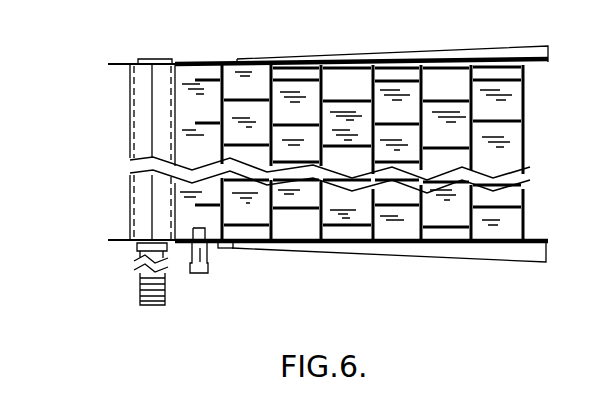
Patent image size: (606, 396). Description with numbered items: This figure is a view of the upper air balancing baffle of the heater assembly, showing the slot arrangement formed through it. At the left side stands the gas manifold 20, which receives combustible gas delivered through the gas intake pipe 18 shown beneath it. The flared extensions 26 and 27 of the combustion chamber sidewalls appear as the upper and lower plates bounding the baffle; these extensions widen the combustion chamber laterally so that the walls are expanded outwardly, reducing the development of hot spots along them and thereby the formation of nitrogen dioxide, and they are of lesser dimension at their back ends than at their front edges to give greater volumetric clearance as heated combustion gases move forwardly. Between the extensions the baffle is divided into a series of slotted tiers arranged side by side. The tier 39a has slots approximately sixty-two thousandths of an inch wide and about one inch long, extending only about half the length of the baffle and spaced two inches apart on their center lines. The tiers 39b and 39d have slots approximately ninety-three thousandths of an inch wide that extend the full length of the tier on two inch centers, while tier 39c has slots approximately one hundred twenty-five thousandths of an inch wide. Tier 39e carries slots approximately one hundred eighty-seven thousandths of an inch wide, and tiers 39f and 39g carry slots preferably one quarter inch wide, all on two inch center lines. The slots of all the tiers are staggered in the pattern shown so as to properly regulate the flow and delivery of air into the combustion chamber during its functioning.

The gas intake pipe 18 is at (140, 297).
The gas manifold 20 is at (142, 103).
The flared extension 26 is at (546, 262).
The flared extension 27 is at (540, 53).
The air balancing baffle tier 39a is at (188, 78).
The air balancing baffle tier 39b is at (241, 72).
The air balancing baffle tier 39c is at (287, 70).
The air balancing baffle tier 39d is at (342, 75).
The air balancing baffle tier 39e is at (400, 70).
The air balancing baffle tier 39f is at (437, 78).
The air balancing baffle tier 39g is at (482, 72).